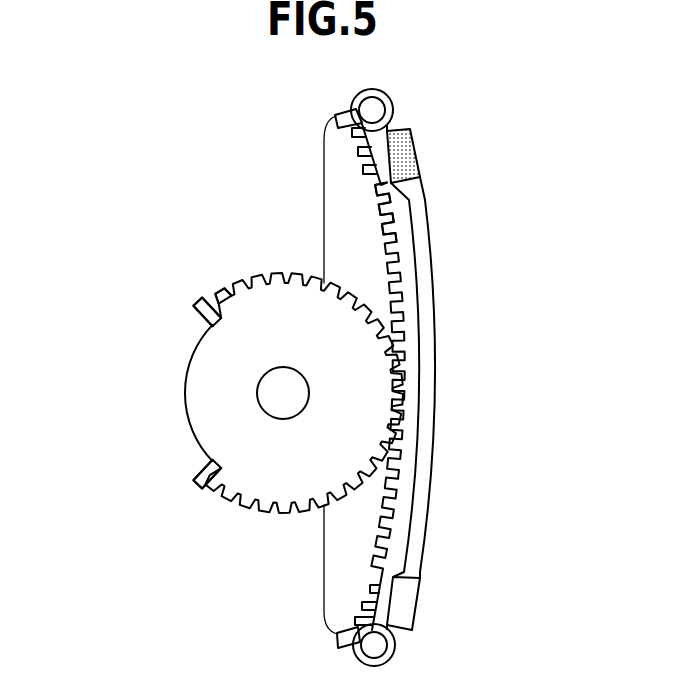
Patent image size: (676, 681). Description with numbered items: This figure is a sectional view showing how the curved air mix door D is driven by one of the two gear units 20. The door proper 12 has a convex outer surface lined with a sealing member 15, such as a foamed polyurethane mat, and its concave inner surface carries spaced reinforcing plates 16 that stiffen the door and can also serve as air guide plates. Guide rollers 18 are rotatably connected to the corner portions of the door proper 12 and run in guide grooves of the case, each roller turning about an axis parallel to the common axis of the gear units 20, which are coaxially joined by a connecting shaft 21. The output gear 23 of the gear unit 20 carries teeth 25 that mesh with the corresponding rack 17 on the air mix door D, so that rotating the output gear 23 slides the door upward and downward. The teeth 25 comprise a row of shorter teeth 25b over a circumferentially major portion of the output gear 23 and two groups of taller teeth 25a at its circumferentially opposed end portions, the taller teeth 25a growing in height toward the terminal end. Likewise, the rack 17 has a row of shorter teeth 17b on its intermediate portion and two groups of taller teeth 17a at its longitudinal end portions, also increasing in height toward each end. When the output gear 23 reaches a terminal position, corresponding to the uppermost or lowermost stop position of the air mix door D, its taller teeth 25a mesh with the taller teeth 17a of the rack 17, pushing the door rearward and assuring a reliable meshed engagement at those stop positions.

The door proper 12 is at (436, 326).
The sealing member 15 is at (400, 152).
The reinforcing plate 16 is at (324, 188).
The rack 17 is at (388, 258).
The taller teeth 17a is at (363, 169).
The shorter teeth 17b is at (395, 250).
The guide roller 18 is at (372, 110).
The gear unit 20 is at (250, 371).
The connecting shaft 21 is at (272, 395).
The output gear 23 is at (187, 362).
The teeth 25 is at (196, 371).
The taller teeth 25a is at (201, 302).
The shorter teeth 25b is at (258, 280).
The air mix door D is at (450, 408).